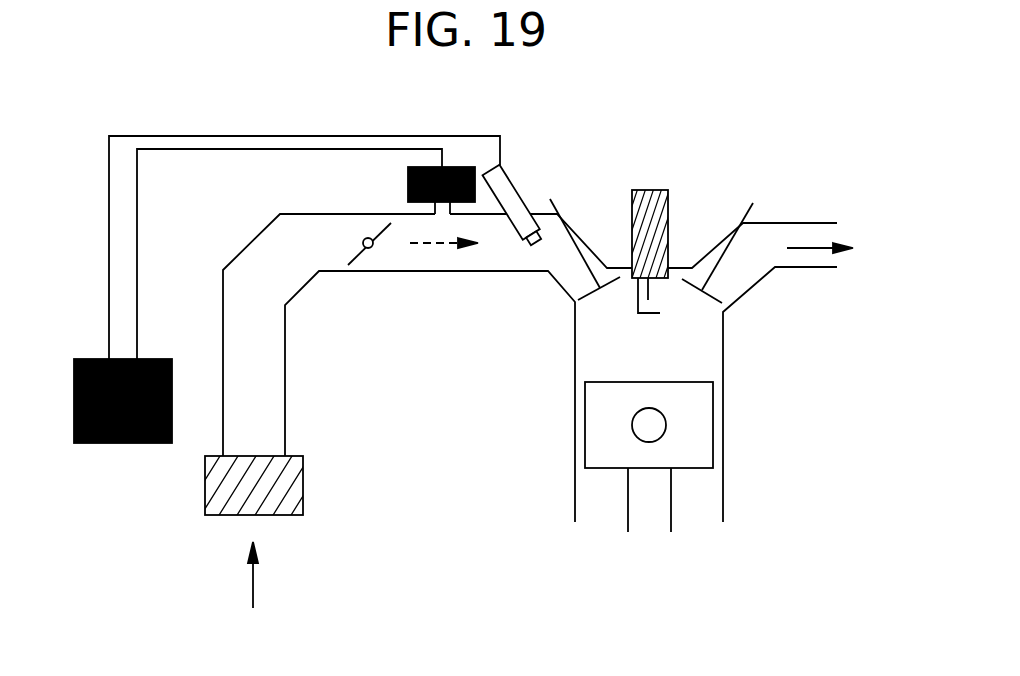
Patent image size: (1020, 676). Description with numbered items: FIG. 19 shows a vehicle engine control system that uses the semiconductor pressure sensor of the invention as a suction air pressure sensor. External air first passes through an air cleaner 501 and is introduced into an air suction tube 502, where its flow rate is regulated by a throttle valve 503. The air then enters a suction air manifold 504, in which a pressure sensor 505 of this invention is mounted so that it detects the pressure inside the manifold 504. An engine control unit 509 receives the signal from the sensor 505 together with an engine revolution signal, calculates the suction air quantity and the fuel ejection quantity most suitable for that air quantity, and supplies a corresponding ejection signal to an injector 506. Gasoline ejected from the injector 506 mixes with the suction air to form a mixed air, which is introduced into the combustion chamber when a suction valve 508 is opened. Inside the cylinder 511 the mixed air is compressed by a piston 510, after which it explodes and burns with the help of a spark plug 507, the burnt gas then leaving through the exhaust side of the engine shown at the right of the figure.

The air cleaner 501 is at (293, 480).
The air suction tube 502 is at (252, 424).
The throttle valve 503 is at (363, 258).
The suction air manifold 504 is at (482, 257).
The pressure sensor 505 is at (408, 181).
The injector 506 is at (498, 184).
The spark plug 507 is at (662, 213).
The suction valve 508 is at (580, 247).
The engine control unit 509 is at (122, 443).
The piston 510 is at (687, 415).
The cylinder 511 is at (675, 347).